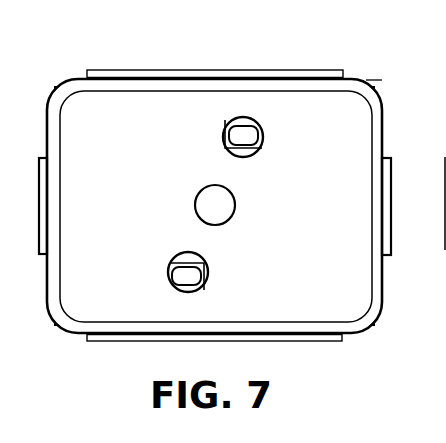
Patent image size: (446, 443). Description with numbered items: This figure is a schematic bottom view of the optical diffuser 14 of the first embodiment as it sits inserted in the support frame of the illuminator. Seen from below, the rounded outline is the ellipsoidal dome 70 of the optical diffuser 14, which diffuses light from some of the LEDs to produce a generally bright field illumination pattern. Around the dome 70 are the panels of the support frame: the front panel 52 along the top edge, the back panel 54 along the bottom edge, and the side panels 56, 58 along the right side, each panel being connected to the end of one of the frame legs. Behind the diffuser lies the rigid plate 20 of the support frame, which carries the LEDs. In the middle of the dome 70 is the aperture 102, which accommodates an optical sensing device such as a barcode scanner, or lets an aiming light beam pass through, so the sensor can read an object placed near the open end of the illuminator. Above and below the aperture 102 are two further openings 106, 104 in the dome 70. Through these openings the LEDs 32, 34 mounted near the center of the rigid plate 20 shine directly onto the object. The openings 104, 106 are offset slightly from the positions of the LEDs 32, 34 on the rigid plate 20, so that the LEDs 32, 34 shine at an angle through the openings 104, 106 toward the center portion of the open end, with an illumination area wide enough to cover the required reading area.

The optical diffuser 14 is at (358, 88).
The rigid plate 20 is at (445, 45).
The LED 32 is at (238, 144).
The LED 34 is at (199, 273).
The front panel 52 is at (230, 72).
The back panel 54 is at (300, 341).
The side panel 56 is at (445, 217).
The side panel 58 is at (391, 185).
The dome 70 is at (103, 122).
The aperture 102 is at (195, 207).
The opening 104 is at (206, 270).
The opening 106 is at (228, 137).